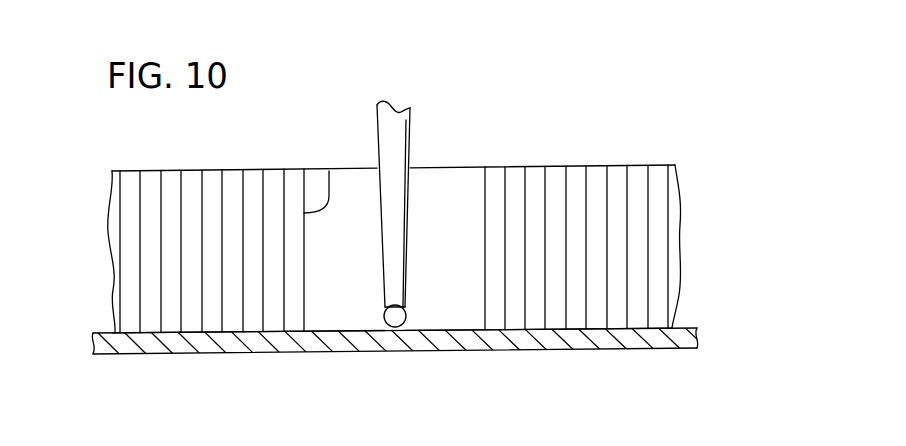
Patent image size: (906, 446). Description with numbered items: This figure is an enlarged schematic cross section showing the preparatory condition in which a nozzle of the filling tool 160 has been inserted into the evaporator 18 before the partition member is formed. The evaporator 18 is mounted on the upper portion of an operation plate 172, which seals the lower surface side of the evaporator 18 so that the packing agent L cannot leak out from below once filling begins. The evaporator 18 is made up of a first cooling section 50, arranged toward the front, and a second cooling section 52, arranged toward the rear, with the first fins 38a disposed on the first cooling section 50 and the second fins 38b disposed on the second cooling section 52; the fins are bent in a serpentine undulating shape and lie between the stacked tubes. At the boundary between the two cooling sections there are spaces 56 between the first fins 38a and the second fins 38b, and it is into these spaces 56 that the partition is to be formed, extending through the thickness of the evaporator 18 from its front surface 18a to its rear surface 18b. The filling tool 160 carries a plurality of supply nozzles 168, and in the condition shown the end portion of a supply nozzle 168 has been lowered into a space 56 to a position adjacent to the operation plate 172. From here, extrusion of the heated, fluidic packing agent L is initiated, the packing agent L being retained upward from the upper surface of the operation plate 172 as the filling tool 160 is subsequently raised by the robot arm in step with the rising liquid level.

The evaporator 18 is at (397, 252).
The front surface 18a is at (538, 330).
The rear surface 18b is at (557, 166).
The first fins 38a is at (650, 255).
The second fins 38b is at (160, 265).
The first cooling section 50 is at (607, 155).
The second cooling section 52 is at (173, 162).
The spaces 56 is at (329, 171).
The filling tool 160 is at (430, 202).
The supply nozzles 168 is at (398, 202).
The operation plate 172 is at (323, 342).
The packing agent L is at (407, 320).